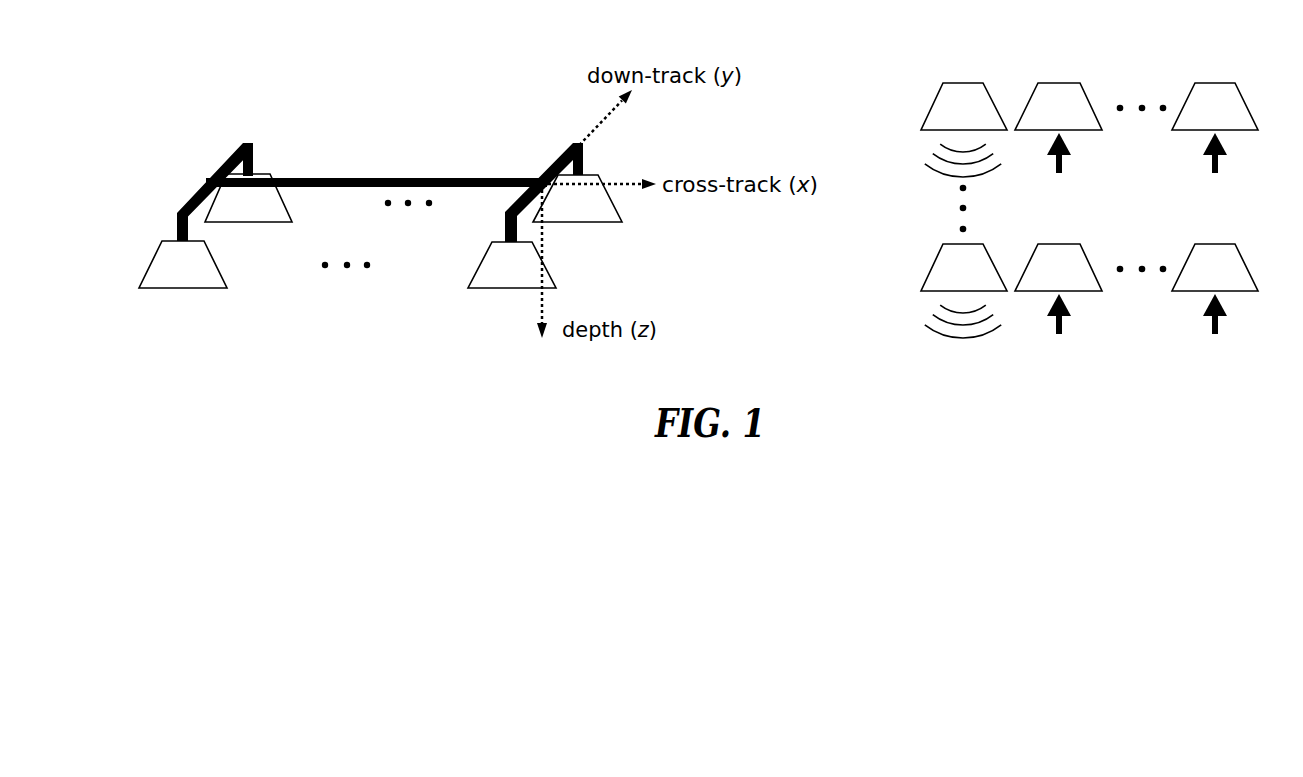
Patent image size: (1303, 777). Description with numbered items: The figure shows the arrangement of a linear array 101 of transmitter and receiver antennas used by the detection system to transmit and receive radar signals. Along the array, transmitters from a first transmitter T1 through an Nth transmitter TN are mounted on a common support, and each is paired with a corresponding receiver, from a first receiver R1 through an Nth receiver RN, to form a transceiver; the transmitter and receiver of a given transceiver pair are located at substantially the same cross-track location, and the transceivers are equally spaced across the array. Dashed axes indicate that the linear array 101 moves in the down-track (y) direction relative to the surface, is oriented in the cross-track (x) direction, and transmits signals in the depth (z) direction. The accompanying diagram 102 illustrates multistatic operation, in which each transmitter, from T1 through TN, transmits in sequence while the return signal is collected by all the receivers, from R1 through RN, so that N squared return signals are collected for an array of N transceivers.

The linear array 101 is at (380, 244).
The diagram 102 is at (1122, 369).
The transmitter T1 is at (248, 198).
The transmitter TN is at (577, 198).
The receiver R1 is at (183, 264).
The receiver RN is at (512, 265).